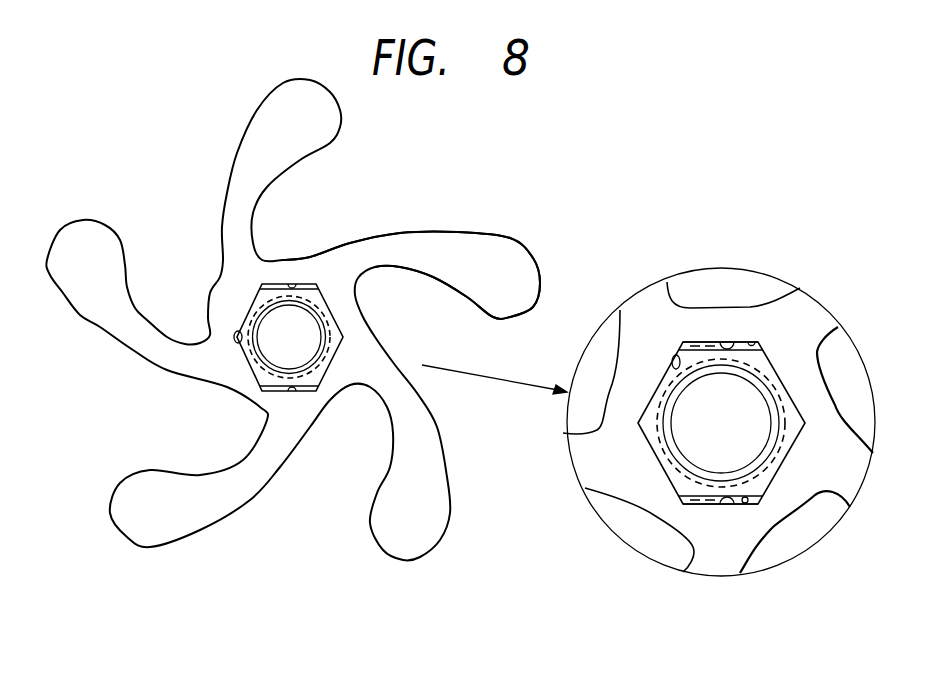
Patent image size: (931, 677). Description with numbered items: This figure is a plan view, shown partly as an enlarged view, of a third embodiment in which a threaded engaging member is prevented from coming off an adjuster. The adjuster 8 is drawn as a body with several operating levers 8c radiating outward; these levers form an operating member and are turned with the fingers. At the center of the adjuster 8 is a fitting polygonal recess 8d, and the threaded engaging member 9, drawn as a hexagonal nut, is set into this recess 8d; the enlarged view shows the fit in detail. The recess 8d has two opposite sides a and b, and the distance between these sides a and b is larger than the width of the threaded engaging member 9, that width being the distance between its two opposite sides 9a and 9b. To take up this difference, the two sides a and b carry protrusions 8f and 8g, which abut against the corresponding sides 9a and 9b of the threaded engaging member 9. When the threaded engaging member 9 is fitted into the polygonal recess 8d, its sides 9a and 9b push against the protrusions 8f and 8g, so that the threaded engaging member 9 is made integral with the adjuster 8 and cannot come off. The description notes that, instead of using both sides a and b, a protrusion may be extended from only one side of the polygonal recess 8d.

The adjuster 8 is at (512, 236).
The operating levers 8c is at (457, 232).
The fitting polygonal recess 8d is at (233, 343).
The protrusion 8f is at (740, 342).
The protrusion 8g is at (683, 497).
The threaded engaging member 9 is at (250, 303).
The side of threaded engaging member 9a is at (698, 347).
The side of threaded engaging member 9b is at (753, 492).
The side of recess a is at (760, 347).
The side of recess b is at (750, 507).